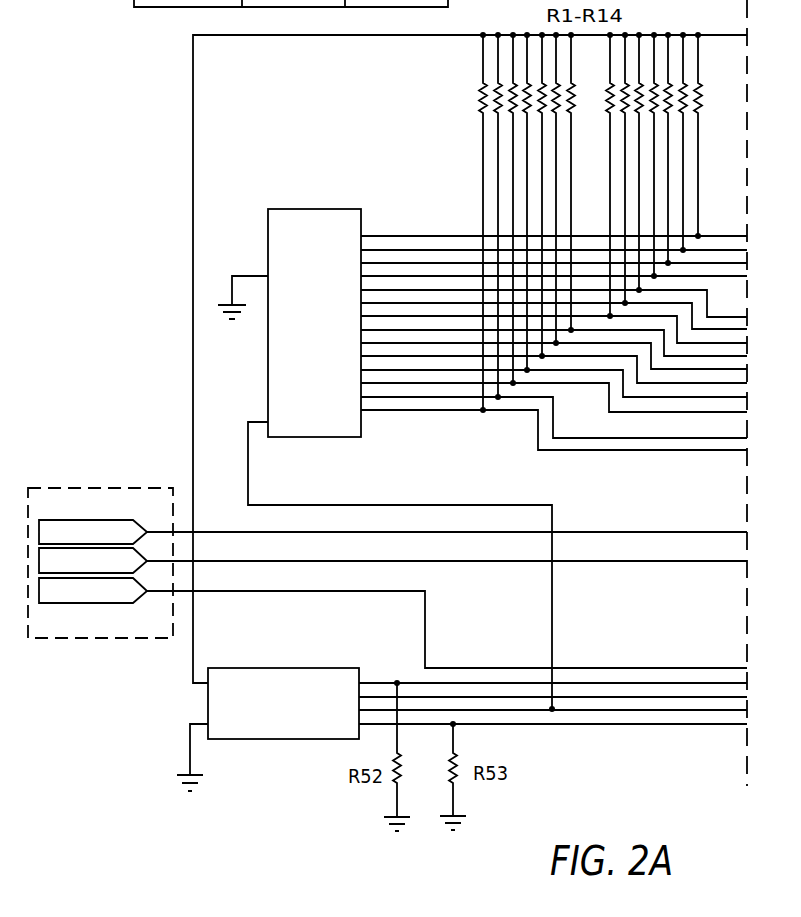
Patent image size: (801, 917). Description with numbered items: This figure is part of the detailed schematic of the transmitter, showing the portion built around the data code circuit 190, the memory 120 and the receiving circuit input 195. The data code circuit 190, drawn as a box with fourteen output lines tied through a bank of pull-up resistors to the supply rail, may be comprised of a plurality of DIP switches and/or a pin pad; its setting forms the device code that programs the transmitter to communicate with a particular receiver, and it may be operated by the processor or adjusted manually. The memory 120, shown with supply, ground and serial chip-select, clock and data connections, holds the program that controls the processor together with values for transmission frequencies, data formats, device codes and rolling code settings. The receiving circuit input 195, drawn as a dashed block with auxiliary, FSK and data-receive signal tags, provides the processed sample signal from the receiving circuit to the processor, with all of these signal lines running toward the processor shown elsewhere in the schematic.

The data code circuit 190 is at (325, 209).
The receiving circuit input 195 is at (103, 485).
The memory 120 is at (273, 668).